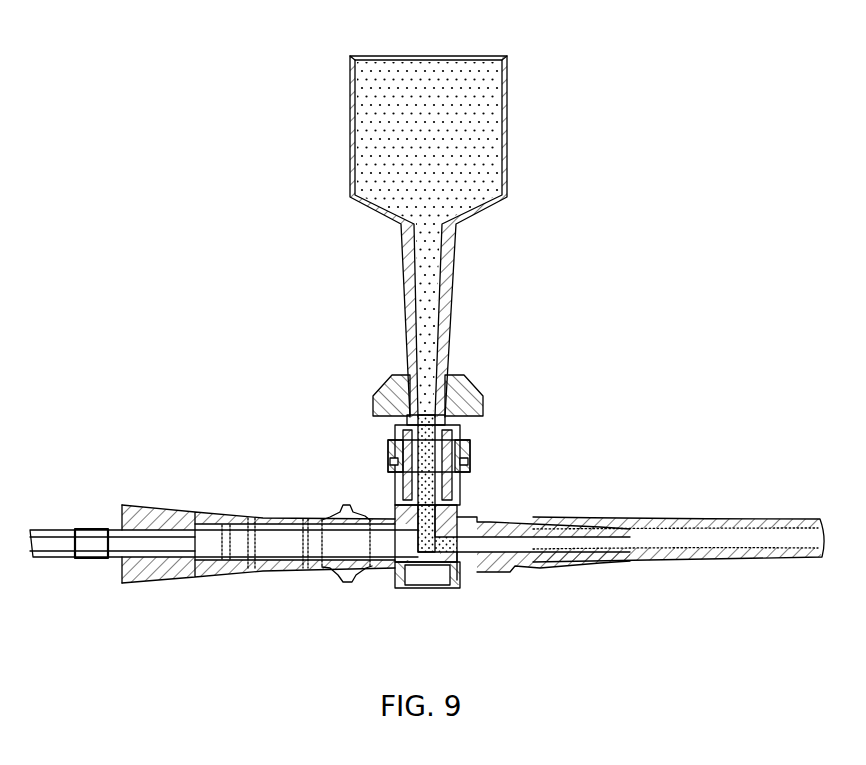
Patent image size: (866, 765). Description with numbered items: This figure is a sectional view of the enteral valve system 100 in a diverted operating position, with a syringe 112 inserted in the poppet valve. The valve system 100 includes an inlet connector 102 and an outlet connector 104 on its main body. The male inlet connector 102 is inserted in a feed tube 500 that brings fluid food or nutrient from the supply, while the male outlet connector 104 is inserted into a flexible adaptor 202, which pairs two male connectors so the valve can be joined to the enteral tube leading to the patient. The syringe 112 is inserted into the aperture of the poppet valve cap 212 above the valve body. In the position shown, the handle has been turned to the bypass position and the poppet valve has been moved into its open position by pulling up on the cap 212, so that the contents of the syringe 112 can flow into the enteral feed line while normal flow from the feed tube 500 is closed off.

The syringe 112 is at (590, 117).
The poppet valve cap 212 is at (382, 385).
The enteral valve system 100 is at (553, 458).
The flexible adaptor 202 is at (262, 517).
The outlet connector 104 is at (343, 572).
The inlet connector 102 is at (507, 566).
The feed tube 500 is at (700, 524).